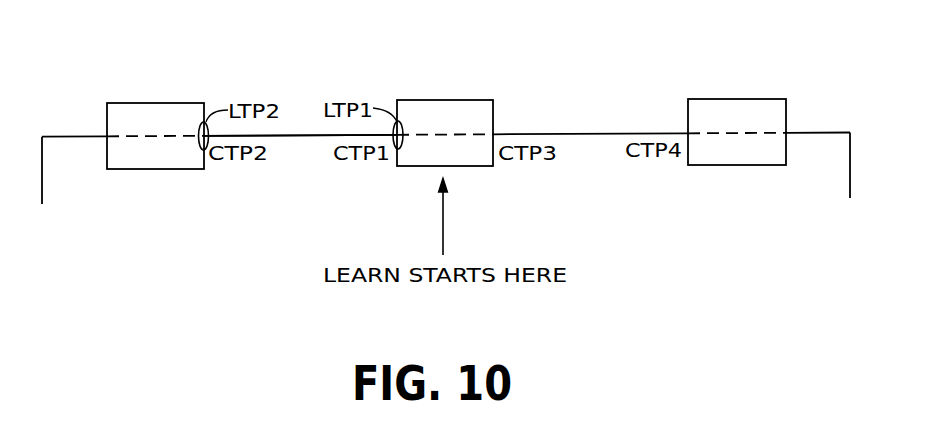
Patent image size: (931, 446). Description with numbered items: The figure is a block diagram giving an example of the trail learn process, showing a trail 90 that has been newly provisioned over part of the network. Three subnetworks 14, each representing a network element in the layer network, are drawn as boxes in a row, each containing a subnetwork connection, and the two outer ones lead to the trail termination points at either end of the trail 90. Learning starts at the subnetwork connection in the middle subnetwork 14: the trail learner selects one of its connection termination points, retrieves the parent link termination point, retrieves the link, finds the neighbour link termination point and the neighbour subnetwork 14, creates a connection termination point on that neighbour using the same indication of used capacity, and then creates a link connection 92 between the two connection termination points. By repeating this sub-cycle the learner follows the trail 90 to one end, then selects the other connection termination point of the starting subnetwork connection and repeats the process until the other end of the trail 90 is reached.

The subnetwork 14 is at (192, 103).
The trail 90 is at (305, 102).
The link connection 92 is at (291, 136).